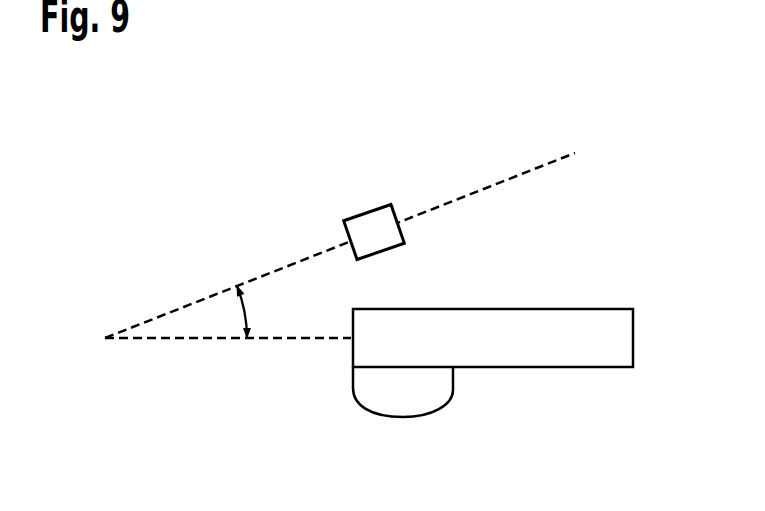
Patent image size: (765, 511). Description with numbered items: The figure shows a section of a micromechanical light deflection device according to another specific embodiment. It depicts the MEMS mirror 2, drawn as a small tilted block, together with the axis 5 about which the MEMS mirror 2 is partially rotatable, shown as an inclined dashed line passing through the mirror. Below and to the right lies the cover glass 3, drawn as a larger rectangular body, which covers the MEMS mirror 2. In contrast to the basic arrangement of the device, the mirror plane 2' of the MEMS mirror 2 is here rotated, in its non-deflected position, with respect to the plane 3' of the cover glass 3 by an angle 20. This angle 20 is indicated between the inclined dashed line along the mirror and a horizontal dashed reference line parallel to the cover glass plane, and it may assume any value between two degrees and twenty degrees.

The MEMS mirror 2 is at (374, 199).
The mirror plane 2' is at (300, 161).
The axis 5 is at (487, 188).
The angle 20 is at (247, 310).
The cover glass 3 is at (529, 363).
The plane of cover glass 3' is at (587, 431).